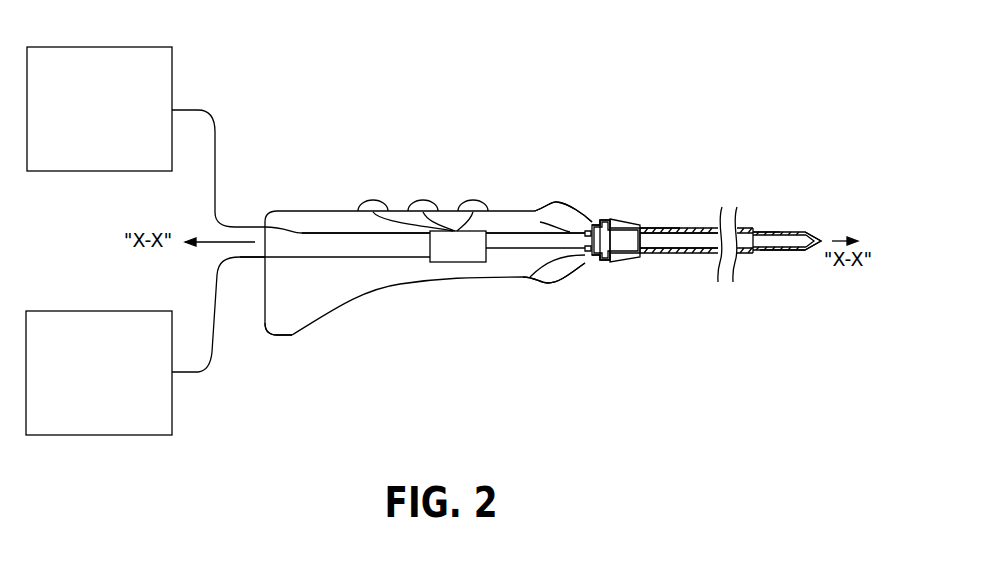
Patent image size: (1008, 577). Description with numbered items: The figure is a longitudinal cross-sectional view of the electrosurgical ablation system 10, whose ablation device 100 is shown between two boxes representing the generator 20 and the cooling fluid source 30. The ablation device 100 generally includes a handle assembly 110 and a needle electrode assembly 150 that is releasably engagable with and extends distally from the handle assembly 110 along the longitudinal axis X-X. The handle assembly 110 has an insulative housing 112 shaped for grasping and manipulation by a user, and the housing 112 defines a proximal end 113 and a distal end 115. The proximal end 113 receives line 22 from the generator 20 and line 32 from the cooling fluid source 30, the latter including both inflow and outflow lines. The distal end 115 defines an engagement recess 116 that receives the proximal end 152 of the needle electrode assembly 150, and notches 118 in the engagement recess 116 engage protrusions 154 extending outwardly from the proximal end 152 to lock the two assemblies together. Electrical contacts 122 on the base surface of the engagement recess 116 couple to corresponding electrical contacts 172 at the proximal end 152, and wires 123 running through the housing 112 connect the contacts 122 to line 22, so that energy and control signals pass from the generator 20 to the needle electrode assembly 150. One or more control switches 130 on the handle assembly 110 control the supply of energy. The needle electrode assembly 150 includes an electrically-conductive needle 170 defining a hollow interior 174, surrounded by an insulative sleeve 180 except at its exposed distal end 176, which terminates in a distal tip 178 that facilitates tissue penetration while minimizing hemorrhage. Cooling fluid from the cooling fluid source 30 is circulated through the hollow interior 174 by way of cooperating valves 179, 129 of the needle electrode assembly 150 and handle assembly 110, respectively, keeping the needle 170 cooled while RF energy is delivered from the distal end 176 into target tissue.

The ablation system 10 is at (447, 134).
The generator 20 is at (99, 109).
The line 22 is at (218, 154).
The cooling fluid source 30 is at (99, 373).
The line 32 is at (212, 356).
The ablation device 100 is at (621, 134).
The handle assembly 110 is at (290, 211).
The housing 112 is at (400, 284).
The proximal end 113 is at (290, 335).
The distal end 115 is at (578, 268).
The engagement recess 116 is at (630, 225).
The notches 118 is at (603, 218).
The electrical contacts 122 is at (557, 203).
The wires 123 is at (322, 233).
The valve 129 is at (537, 280).
The control switches 130 is at (366, 200).
The needle electrode assembly 150 is at (706, 228).
The proximal end 152 is at (663, 228).
The protrusions 154 is at (607, 219).
The needle 170 is at (786, 232).
The electrical contacts 172 is at (596, 219).
The hollow interior 174 is at (758, 231).
The distal end 176 is at (782, 250).
The distal tip 178 is at (817, 240).
The valve 179 is at (597, 266).
The insulative sleeve 180 is at (700, 253).